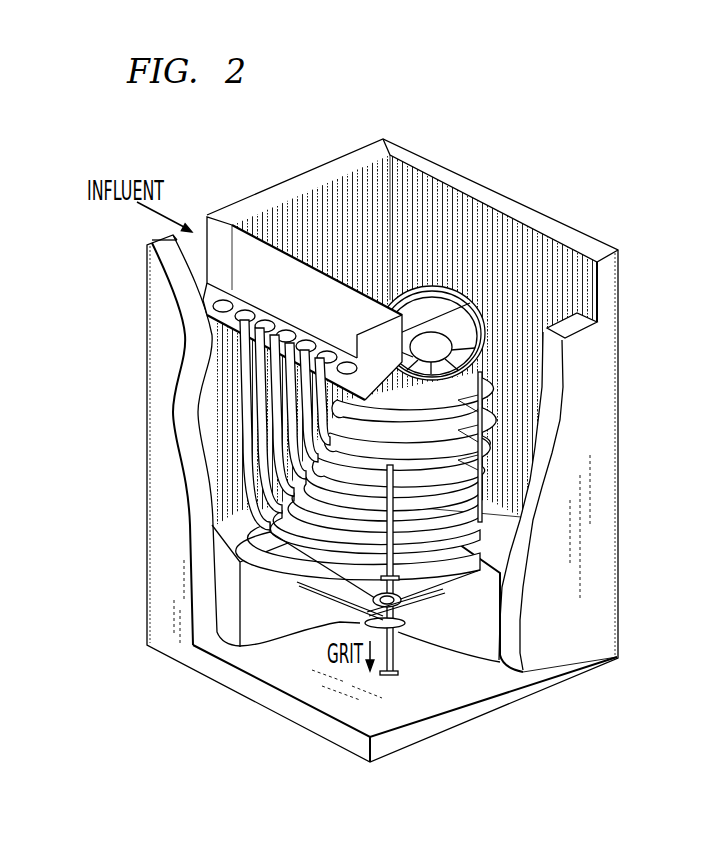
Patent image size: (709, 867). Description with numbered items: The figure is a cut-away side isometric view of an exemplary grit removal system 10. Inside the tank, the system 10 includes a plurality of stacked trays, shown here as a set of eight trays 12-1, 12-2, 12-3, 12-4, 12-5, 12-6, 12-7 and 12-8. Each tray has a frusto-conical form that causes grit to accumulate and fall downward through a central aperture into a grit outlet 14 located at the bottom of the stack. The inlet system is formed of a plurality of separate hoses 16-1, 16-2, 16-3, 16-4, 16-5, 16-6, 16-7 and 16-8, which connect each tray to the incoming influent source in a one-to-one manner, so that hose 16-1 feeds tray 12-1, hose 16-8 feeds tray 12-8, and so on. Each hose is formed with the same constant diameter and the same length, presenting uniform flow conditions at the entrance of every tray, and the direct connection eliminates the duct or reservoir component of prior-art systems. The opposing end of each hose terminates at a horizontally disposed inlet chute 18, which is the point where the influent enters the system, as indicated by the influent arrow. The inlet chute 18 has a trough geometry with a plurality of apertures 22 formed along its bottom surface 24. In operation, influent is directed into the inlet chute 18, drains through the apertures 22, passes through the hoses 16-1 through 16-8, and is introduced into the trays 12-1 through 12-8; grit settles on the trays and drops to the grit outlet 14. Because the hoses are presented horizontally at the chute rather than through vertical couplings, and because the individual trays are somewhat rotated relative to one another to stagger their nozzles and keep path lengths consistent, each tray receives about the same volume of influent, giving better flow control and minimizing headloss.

The grit removal system 10 is at (195, 123).
The tray 12-1 is at (410, 555).
The tray 12-2 is at (437, 533).
The tray 12-3 is at (427, 503).
The tray 12-4 is at (430, 480).
The tray 12-5 is at (401, 462).
The tray 12-6 is at (410, 433).
The tray 12-7 is at (413, 399).
The tray 12-8 is at (400, 305).
The grit outlet 14 is at (397, 630).
The hose 16-1 is at (228, 359).
The hose 16-2 is at (240, 387).
The hose 16-3 is at (257, 405).
The hose 16-4 is at (268, 432).
The hose 16-5 is at (313, 437).
The hose 16-6 is at (423, 440).
The hose 16-7 is at (445, 413).
The hose 16-8 is at (463, 380).
The inlet chute 18 is at (302, 273).
The aperture 22 is at (268, 325).
The bottom surface 24 is at (213, 315).